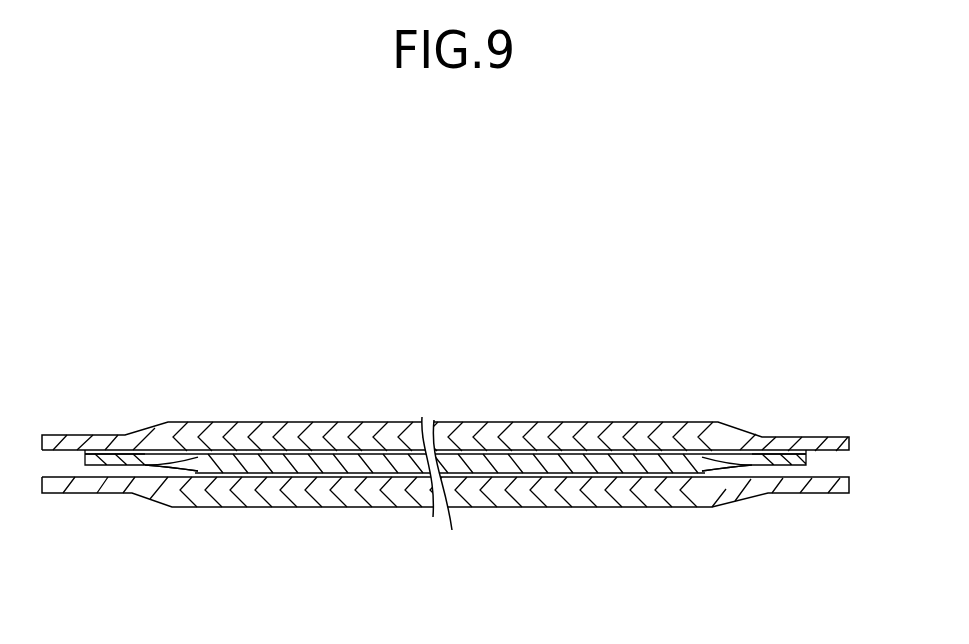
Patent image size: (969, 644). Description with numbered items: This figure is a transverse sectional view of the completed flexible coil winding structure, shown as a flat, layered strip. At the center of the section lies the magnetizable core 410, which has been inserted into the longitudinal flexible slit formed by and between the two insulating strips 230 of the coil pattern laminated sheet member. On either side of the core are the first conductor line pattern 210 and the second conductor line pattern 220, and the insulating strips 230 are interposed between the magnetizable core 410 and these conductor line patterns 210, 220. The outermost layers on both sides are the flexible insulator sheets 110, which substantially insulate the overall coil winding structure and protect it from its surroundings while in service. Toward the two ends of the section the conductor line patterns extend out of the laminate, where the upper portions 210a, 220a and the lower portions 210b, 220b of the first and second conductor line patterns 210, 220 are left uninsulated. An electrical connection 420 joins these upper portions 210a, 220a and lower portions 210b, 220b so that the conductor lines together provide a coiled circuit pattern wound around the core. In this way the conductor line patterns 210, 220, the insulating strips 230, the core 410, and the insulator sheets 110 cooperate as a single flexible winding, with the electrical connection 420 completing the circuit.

The flexible insulator sheet 110 is at (323, 425).
The first conductor line pattern 210 is at (419, 450).
The upper portion of first conductor line pattern 210a is at (782, 457).
The lower portion of first conductor line pattern 210b is at (103, 458).
The second conductor line pattern 220 is at (362, 485).
The upper portion of second conductor line pattern 220a is at (112, 468).
The lower portion of second conductor line pattern 220b is at (772, 478).
The insulating strip 230 is at (489, 455).
The magnetizable core 410 is at (583, 460).
The electrical connection 420 is at (115, 447).